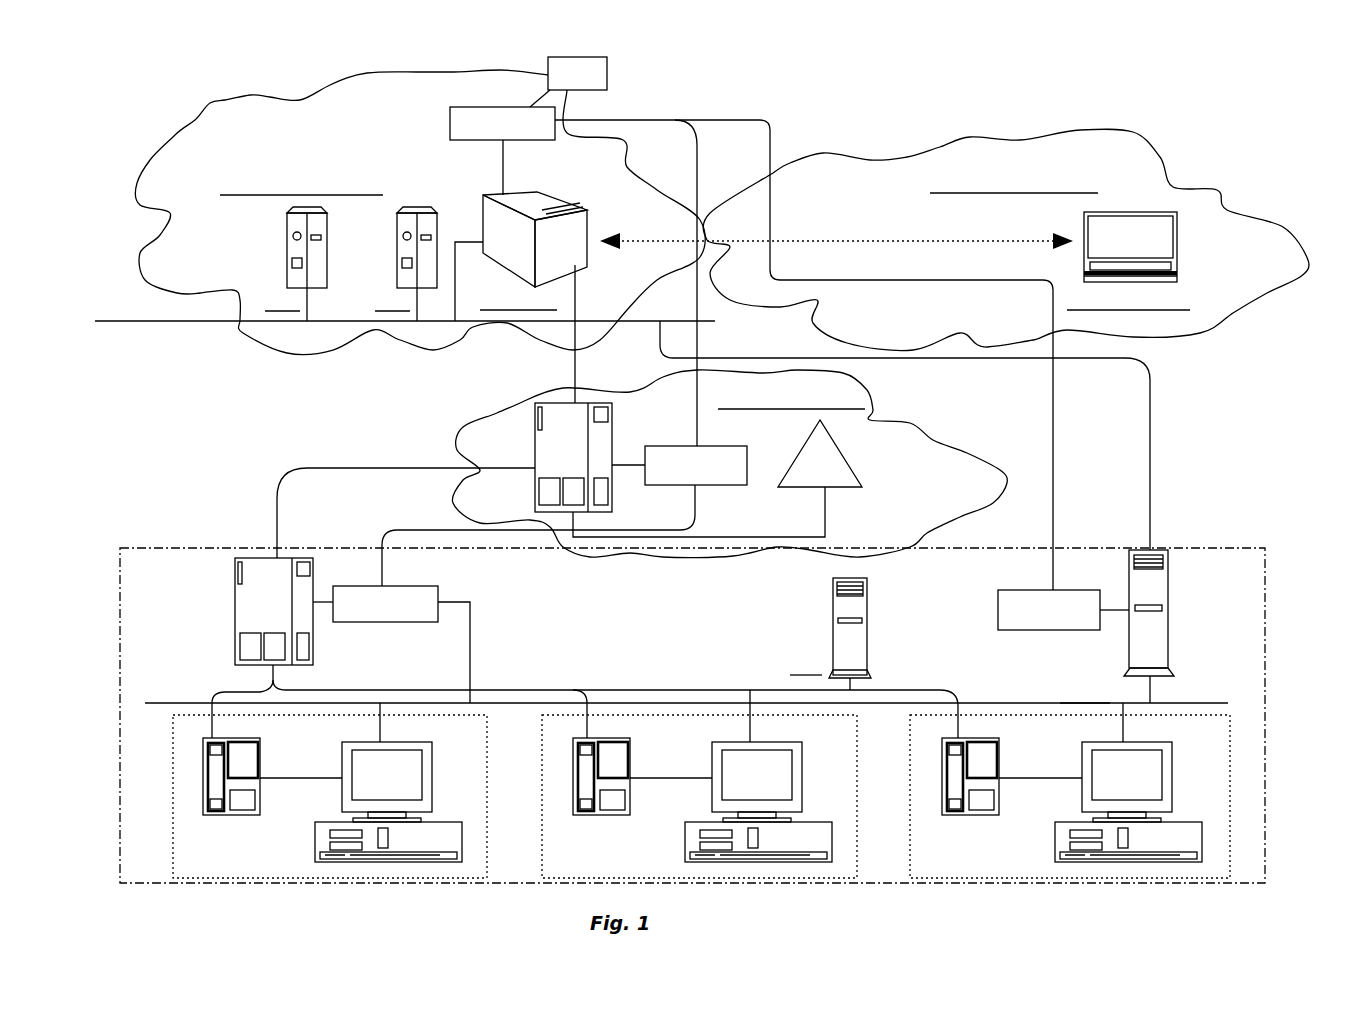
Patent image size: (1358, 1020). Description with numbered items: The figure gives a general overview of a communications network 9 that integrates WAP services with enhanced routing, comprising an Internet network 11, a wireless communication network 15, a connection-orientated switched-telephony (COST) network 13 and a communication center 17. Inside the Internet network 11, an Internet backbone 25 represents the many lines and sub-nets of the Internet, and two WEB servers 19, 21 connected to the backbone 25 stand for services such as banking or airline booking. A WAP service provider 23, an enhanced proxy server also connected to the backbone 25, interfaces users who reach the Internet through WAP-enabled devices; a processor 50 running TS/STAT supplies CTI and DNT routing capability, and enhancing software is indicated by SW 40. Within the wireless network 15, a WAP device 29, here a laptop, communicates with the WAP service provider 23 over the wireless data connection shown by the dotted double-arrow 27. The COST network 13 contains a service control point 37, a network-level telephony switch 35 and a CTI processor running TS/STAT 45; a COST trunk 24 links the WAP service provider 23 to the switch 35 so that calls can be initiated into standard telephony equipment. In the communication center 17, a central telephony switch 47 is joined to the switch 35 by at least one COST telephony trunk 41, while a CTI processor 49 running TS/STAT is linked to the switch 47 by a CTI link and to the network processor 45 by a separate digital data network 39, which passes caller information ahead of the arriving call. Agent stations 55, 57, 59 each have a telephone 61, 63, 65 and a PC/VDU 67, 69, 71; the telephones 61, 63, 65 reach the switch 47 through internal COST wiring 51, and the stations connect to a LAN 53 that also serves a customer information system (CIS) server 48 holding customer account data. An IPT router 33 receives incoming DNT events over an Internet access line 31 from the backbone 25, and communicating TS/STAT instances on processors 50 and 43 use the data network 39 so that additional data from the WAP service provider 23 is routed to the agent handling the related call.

The communications network 9 is at (148, 470).
The Internet network 11 is at (248, 158).
The connection-orientated switched-telephony (COST) network 13 is at (943, 437).
The wireless communication network 15 is at (965, 128).
The communication center 17 is at (1295, 705).
The WEB server 19 is at (287, 263).
The WEB server 21 is at (397, 263).
The WAP service provider 23 is at (483, 222).
The COST trunk 24 is at (573, 307).
The Internet backbone 25 is at (143, 320).
The dotted double-arrow 27 is at (878, 238).
The WAP device 29 is at (1177, 245).
The Internet access line 31 is at (1150, 478).
The IPT router 33 is at (1168, 647).
The network-level telephony switch 35 is at (535, 483).
The service control point 37 is at (840, 452).
The digital data network 39 is at (754, 108).
The enhancing software 40 is at (607, 86).
The COST telephony trunk 41 is at (400, 468).
The TS/STAT processor 43 is at (1023, 590).
The transaction server/statistical server (TS/STAT) 45 is at (737, 487).
The central telephony switch 47 is at (235, 618).
The customer information system (CIS) server 48 is at (833, 642).
The CTI processor 49 is at (385, 622).
The processor 50 is at (450, 122).
The internal COST wiring 51 is at (758, 690).
The LAN 53 is at (1080, 703).
The agent station 55 is at (156, 808).
The agent station 57 is at (526, 805).
The agent station 59 is at (895, 796).
The telephone 61 is at (225, 815).
The telephone 63 is at (595, 815).
The telephone 65 is at (964, 815).
The PC/VDU 67 is at (342, 770).
The PC/VDU 69 is at (712, 770).
The PC/VDU 71 is at (1082, 770).